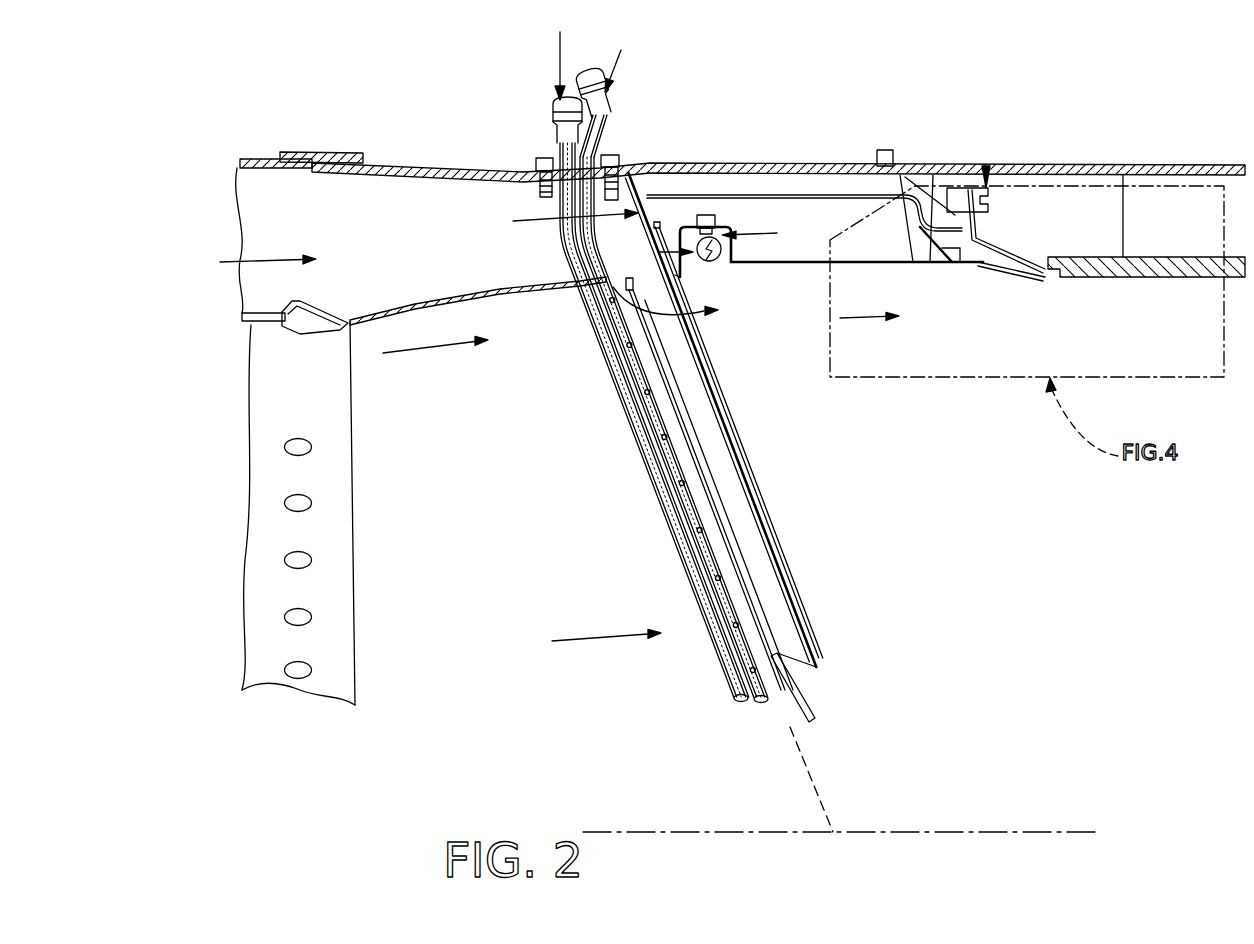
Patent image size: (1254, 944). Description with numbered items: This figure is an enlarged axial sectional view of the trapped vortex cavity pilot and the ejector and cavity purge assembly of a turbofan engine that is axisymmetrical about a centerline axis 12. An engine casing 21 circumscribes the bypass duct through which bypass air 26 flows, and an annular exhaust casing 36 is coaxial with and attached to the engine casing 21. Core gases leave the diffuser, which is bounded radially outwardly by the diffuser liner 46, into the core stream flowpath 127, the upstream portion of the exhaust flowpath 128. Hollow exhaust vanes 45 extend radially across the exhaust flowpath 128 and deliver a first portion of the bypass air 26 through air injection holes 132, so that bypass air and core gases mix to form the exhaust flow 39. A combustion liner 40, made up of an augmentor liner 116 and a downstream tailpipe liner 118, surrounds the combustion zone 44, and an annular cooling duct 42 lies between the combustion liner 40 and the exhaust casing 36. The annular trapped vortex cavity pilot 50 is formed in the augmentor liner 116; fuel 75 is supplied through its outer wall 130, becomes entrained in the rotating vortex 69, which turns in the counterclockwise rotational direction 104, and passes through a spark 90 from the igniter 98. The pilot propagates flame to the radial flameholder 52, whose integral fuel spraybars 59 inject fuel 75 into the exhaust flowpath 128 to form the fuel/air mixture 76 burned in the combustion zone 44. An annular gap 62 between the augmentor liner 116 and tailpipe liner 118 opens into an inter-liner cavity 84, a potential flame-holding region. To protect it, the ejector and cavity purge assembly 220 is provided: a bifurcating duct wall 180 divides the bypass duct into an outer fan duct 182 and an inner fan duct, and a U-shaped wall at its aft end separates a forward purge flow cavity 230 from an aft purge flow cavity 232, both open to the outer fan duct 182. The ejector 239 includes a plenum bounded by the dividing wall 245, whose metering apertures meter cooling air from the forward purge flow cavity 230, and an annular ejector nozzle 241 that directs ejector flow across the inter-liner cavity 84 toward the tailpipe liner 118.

The centerline axis 12 is at (978, 830).
The engine casing 21 is at (280, 173).
The bypass air 26 is at (243, 262).
The exhaust casing 36 is at (938, 207).
The exhaust flow 39 is at (597, 642).
The combustion liner 40 is at (897, 263).
The cooling duct 42 is at (933, 177).
The combustion zone 44 is at (849, 421).
The exhaust vanes 45 is at (353, 543).
The diffuser liner 46 is at (432, 300).
The trapped vortex cavity pilot 50 is at (718, 259).
The radial flameholder 52 is at (836, 638).
The integral fuel spraybars 59 is at (692, 558).
The annular gap 62 is at (1049, 280).
The rotating vortex 69 is at (713, 232).
The fuel 75 is at (558, 43).
The fuel/air mixture 76 is at (853, 325).
The inter-liner cavity 84 is at (1050, 257).
The spark 90 is at (722, 249).
The igniter 98 is at (693, 214).
The counterclockwise rotational direction 104 is at (700, 258).
The augmentor liner 116 is at (927, 267).
The tailpipe liner 118 is at (1141, 279).
The core stream flowpath 127 is at (509, 491).
The exhaust flowpath 128 is at (937, 562).
The outer wall 130 is at (720, 240).
The air injection holes 132 is at (291, 512).
The bifurcating duct wall 180 is at (802, 195).
The outer fan duct 182 is at (830, 196).
The ejector and cavity purge assembly 220 is at (986, 165).
The forward purge flow cavity 230 is at (883, 150).
The aft purge flow cavity 232 is at (999, 239).
The ejector 239 is at (973, 238).
The ejector nozzle 241 is at (1010, 272).
The dividing wall 245 is at (945, 215).